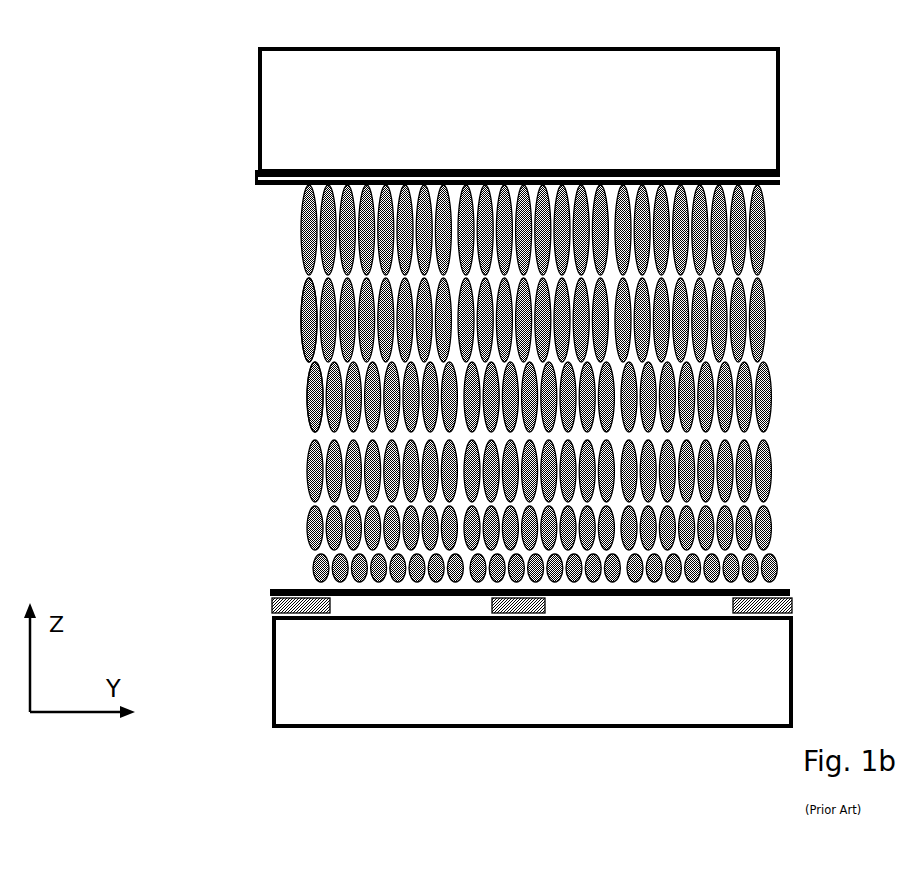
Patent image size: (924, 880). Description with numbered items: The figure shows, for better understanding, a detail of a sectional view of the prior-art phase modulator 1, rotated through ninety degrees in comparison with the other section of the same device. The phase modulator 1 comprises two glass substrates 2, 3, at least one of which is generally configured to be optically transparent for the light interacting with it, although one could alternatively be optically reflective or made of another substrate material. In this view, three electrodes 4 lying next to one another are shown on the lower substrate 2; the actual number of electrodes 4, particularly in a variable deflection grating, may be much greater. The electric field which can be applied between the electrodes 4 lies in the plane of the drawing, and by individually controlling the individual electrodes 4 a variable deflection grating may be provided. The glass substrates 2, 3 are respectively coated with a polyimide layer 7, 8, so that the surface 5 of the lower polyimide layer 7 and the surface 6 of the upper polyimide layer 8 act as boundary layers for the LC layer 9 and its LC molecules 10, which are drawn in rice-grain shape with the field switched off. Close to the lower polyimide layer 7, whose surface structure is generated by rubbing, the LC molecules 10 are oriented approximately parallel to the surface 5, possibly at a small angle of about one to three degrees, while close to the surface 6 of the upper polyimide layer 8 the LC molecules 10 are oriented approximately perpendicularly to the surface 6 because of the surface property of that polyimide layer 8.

The phase modulator 1 is at (834, 47).
The first glass substrate 2 is at (525, 699).
The second glass substrate 3 is at (506, 132).
The electrodes 4 is at (533, 608).
The surface 5 is at (278, 582).
The surface 6 is at (282, 190).
The polyimide layer 7 is at (784, 590).
The polyimide layer 8 is at (781, 186).
The LC layer 9 is at (805, 374).
The LC molecules 10 is at (304, 333).